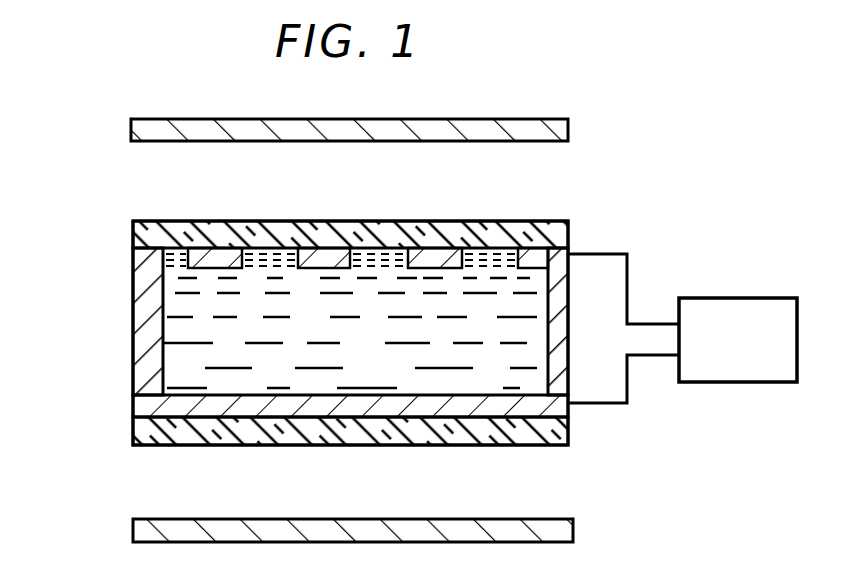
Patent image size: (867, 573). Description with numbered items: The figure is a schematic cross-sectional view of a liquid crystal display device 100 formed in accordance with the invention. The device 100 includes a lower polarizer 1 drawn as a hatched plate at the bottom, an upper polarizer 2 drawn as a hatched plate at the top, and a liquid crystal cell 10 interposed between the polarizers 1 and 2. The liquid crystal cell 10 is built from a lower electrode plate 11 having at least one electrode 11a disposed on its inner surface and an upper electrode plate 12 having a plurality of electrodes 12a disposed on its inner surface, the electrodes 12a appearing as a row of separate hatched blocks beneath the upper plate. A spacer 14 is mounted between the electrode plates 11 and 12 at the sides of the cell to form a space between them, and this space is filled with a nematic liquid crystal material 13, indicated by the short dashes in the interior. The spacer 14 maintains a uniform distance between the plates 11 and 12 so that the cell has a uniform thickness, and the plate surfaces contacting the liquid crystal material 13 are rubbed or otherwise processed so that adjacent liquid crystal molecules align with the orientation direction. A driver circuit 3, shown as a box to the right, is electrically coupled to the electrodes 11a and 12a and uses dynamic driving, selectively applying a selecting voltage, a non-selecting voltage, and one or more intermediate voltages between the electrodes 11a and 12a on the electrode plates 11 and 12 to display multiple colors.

The liquid crystal display device 100 is at (603, 82).
The lower polarizer 1 is at (140, 535).
The upper polarizer 2 is at (132, 131).
The driver circuit 3 is at (731, 307).
The liquid crystal cell 10 is at (66, 203).
The lower electrode plate 11 is at (143, 432).
The electrode 11a is at (145, 406).
The upper electrode plate 12 is at (135, 232).
The electrodes 12a is at (166, 257).
The nematic liquid crystal material 13 is at (195, 347).
The spacer 14 is at (145, 303).